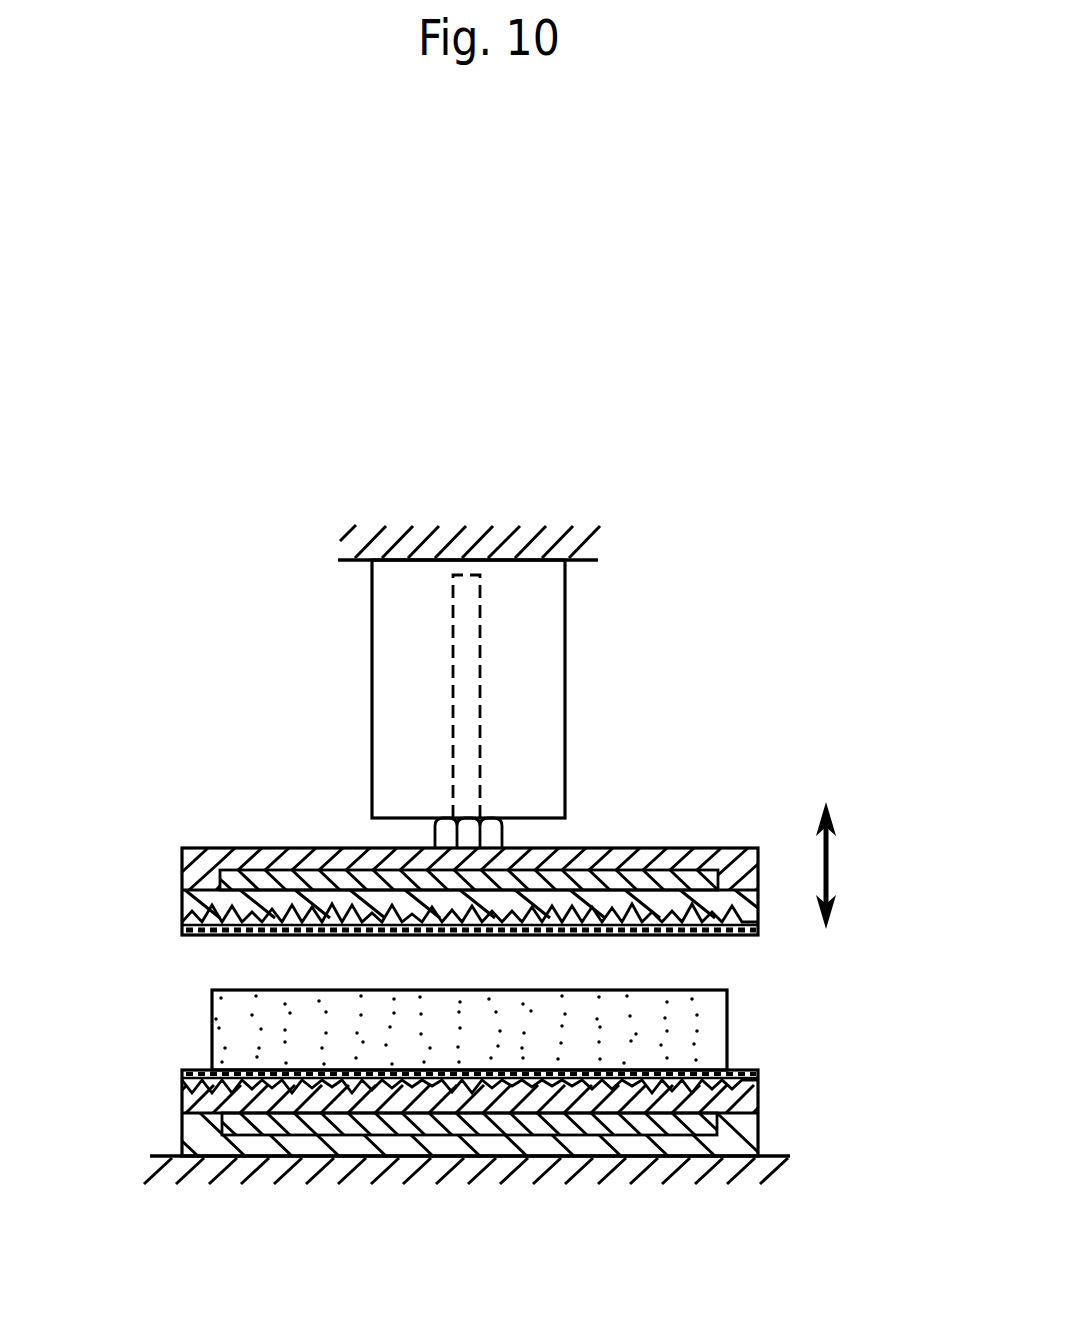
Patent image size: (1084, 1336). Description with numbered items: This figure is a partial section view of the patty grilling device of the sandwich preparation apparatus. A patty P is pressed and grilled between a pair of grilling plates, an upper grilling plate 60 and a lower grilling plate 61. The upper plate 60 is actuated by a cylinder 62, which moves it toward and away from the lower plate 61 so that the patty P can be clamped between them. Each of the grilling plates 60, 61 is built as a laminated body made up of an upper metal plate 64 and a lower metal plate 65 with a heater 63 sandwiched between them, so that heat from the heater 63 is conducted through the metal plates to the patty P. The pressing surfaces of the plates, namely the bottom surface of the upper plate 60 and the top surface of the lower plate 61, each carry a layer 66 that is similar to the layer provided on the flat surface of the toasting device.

The upper grilling plate 60 is at (779, 829).
The lower grilling plate 61 is at (810, 1128).
The cylinder 62 is at (540, 650).
The heater 63 is at (692, 870).
The upper metal plate 64 is at (183, 852).
The lower metal plate 65 is at (183, 896).
The layer 66 is at (185, 936).
The patty P is at (700, 1032).